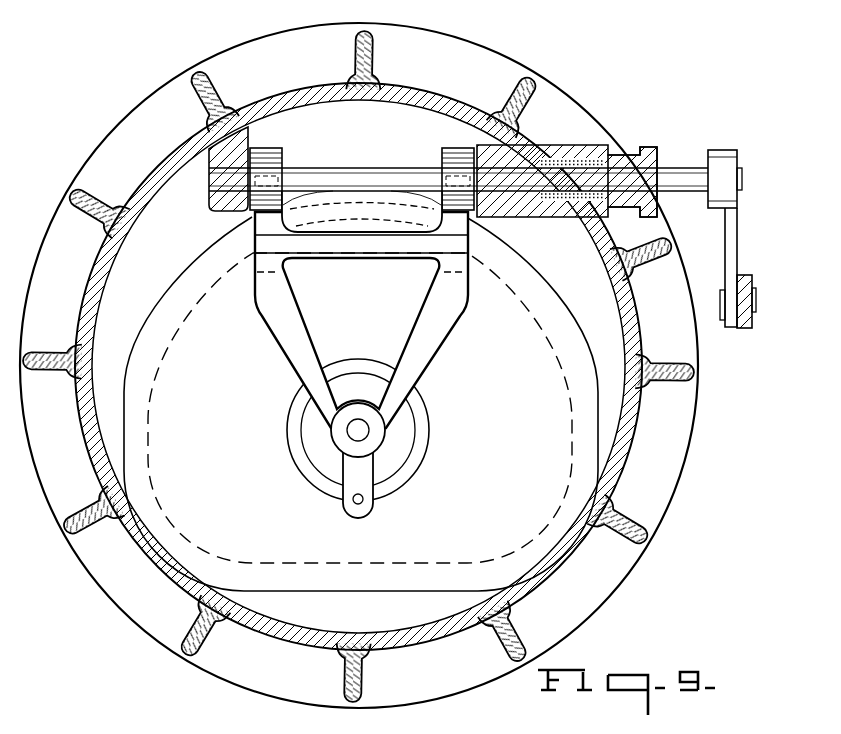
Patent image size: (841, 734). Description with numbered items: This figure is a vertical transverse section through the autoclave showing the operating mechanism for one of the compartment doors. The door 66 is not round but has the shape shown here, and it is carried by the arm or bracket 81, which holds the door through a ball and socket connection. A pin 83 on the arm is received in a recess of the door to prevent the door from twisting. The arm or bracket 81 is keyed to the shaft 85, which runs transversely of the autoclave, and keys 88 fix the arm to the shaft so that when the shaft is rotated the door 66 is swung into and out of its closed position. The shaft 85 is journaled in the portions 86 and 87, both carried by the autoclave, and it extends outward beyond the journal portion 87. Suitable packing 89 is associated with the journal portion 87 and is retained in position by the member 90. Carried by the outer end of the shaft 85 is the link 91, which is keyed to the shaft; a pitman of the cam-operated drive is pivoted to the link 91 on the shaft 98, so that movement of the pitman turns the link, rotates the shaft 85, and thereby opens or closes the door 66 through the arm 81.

The door 66 is at (520, 529).
The arm or bracket 81 is at (433, 335).
The pin 83 is at (363, 499).
The shaft 85 is at (398, 175).
The journal portion 86 is at (225, 199).
The journal portion 87 is at (525, 148).
The keys 88 is at (362, 211).
The packing 89 is at (592, 152).
The member 90 is at (652, 149).
The link 91 is at (727, 233).
The shaft 98 is at (754, 327).